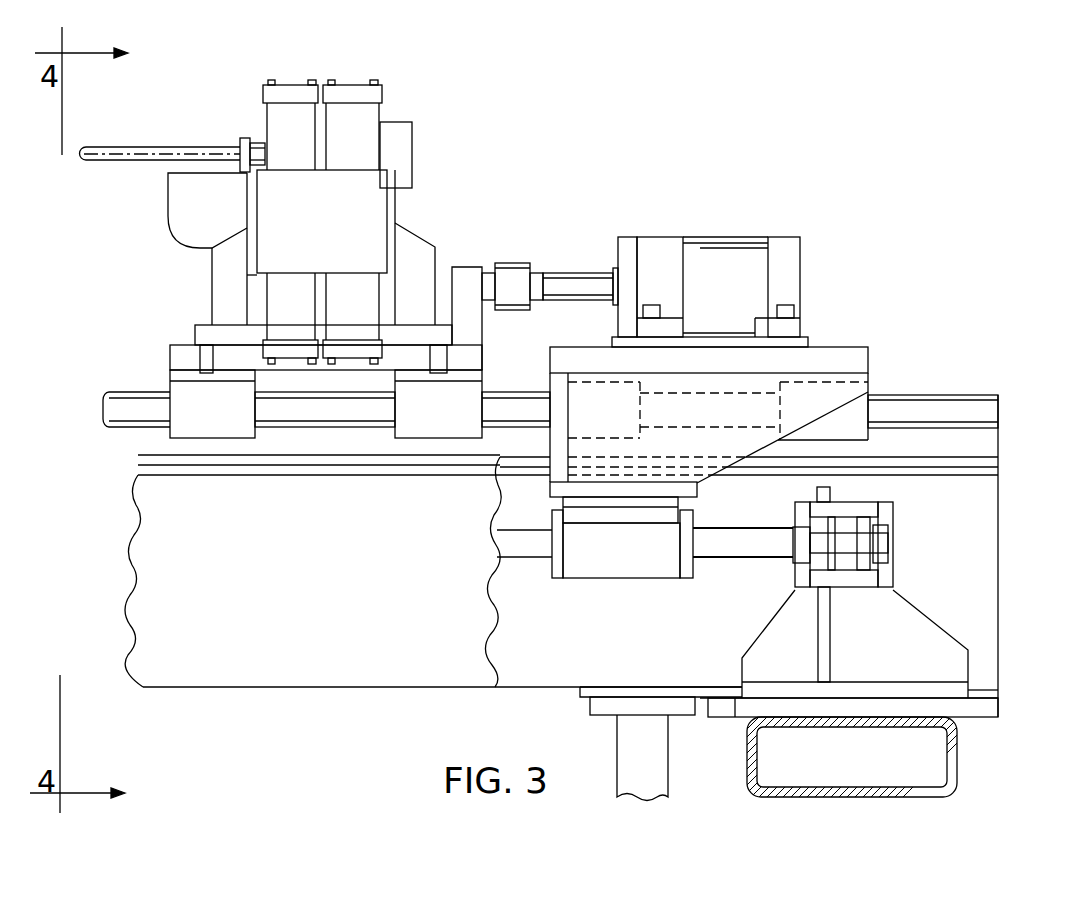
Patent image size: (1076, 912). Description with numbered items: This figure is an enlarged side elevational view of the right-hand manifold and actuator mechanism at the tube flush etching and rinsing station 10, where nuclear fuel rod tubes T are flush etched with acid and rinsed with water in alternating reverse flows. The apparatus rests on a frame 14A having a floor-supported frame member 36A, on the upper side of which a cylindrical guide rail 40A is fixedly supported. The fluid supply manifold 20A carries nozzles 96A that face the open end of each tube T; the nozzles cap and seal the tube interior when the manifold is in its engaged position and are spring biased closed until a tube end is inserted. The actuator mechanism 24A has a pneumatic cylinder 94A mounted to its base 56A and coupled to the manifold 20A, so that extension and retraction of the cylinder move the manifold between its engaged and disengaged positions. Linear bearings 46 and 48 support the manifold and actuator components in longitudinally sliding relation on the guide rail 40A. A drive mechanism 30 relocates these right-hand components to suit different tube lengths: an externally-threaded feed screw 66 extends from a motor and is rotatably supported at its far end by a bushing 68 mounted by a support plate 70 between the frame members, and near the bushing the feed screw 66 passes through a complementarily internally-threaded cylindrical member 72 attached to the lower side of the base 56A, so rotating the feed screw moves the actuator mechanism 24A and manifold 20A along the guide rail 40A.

The tube flush etching and rinsing station 10 is at (848, 216).
The tube T is at (134, 146).
The nozzles 96A is at (243, 140).
The fluid supply manifold 20A is at (247, 255).
The actuator mechanism 24A is at (800, 275).
The pneumatic cylinder 94A is at (722, 238).
The base 56A is at (855, 347).
The cylindrical guide rail 40A is at (313, 430).
The linear bearing 46 is at (228, 438).
The linear bearing 48 is at (842, 432).
The frame 14A is at (405, 689).
The frame member 36A is at (228, 687).
The feed screw 66 is at (555, 580).
The drive mechanism 30 is at (532, 582).
The bushing 68 is at (857, 507).
The internally-threaded cylindrical member 72 is at (650, 580).
The support plate 70 is at (935, 688).